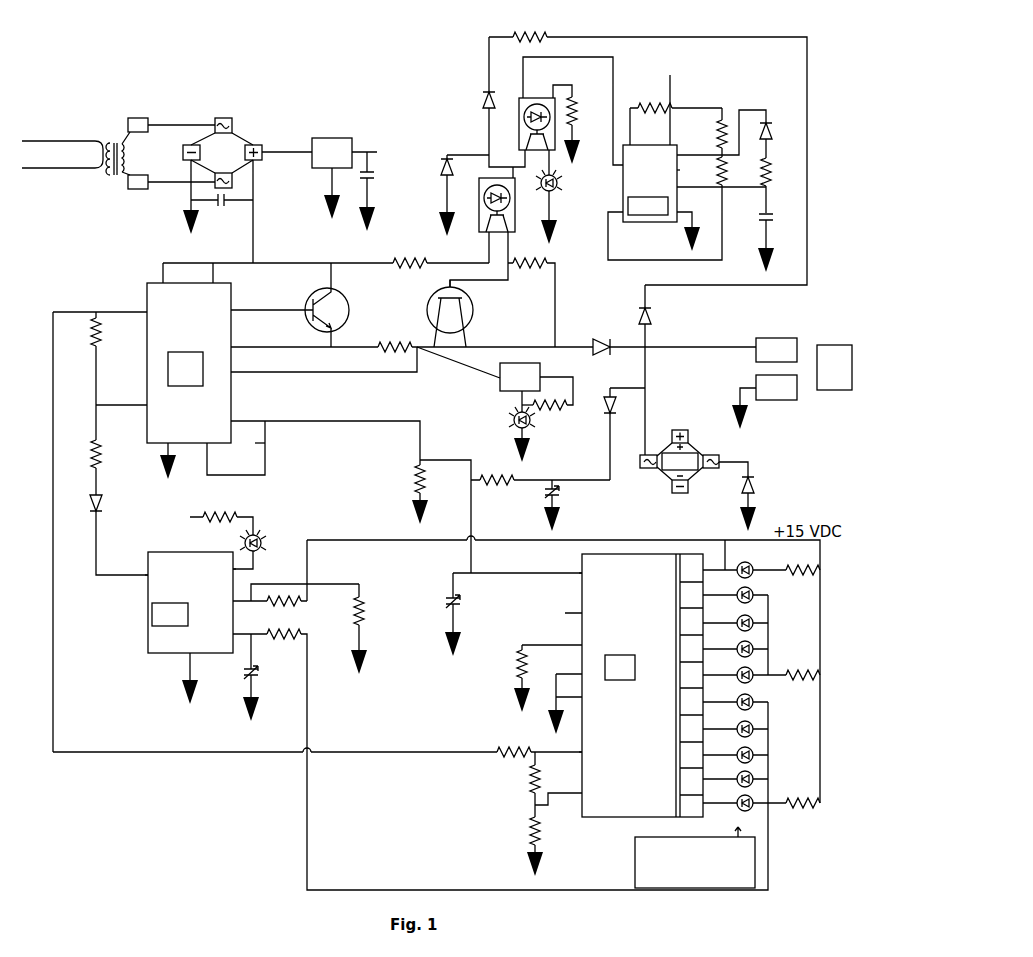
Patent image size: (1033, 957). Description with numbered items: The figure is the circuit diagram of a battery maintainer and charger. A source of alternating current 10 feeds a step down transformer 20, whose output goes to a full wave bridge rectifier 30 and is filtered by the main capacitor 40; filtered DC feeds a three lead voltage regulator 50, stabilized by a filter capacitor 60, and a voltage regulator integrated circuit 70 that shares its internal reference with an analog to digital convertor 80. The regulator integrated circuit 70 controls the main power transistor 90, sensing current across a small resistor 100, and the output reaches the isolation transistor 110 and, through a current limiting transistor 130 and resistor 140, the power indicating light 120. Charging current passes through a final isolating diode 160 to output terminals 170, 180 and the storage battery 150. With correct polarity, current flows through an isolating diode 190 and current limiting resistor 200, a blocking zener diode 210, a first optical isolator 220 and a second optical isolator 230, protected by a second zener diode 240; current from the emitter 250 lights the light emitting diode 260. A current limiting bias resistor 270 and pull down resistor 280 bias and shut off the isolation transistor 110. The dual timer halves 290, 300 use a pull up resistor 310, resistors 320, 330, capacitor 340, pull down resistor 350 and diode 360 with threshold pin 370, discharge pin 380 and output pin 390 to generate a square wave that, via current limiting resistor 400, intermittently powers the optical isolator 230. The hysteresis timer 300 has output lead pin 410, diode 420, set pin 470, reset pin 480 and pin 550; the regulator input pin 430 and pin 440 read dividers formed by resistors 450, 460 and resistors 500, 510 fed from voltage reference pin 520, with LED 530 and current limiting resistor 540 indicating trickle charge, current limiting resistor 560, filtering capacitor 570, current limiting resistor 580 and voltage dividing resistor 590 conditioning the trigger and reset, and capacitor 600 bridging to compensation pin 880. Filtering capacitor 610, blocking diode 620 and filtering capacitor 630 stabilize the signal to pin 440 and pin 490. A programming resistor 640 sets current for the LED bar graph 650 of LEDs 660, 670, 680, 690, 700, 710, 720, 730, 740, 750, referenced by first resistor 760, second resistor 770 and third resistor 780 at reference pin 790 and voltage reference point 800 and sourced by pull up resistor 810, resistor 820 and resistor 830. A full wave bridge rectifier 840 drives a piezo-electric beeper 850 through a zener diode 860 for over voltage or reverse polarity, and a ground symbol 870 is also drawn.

The source of alternating current 10 is at (62, 143).
The step down transformer 20 is at (157, 153).
The full wave bridge rectifier 30 is at (247, 190).
The main capacitor 40 is at (218, 214).
The three lead voltage regulator 50 is at (332, 178).
The filter capacitor 60 is at (385, 182).
The voltage regulator integrated circuit 70 is at (189, 359).
The analog to digital convertor 80 is at (616, 685).
The main power transistor 90 is at (290, 305).
The small resistor 100 is at (412, 339).
The isolation transistor 110 is at (465, 313).
The power indicating light 120 is at (506, 426).
The current limiting transistor 130 is at (402, 376).
The resistor 140 is at (545, 412).
The storage battery 150 is at (834, 367).
The final isolating diode 160 is at (673, 340).
The positive output terminal 170 is at (785, 350).
The negative output terminal 180 is at (773, 402).
The isolating diode 190 is at (660, 370).
The current limiting resistor 200 is at (648, 152).
The blocking zener diode 210 is at (486, 107).
The first optical isolator 220 is at (483, 225).
The second optical isolator 230 is at (571, 111).
The second zener diode 240 is at (448, 195).
The emitter 250 is at (558, 164).
The light emitting diode 260 is at (561, 207).
The current limiting bias resistor 270 is at (326, 273).
The pull down resistor 280 is at (534, 302).
The timer circuit first half 290 is at (661, 198).
The timer circuit second half 300 is at (190, 628).
The pull up resistor 310 is at (676, 103).
The resistor 320 is at (705, 132).
The resistor 330 is at (667, 208).
The capacitor 340 is at (780, 240).
The pull down resistor 350 is at (782, 185).
The diode 360 is at (781, 140).
The threshold pin 370 is at (705, 191).
The discharge pin 380 is at (662, 171).
The output pin 390 is at (695, 137).
The current limiting resistor 400 is at (584, 130).
The output lead pin 410 is at (163, 581).
The diode 420 is at (119, 535).
The input pin 430 is at (137, 411).
The pin 440 is at (307, 441).
The resistor 450 is at (540, 491).
The resistor 460 is at (423, 516).
The set pin 470 is at (482, 758).
The reset pin 480 is at (278, 577).
The pin 490 is at (596, 575).
The resistor 500 is at (80, 467).
The resistor 510 is at (111, 376).
The voltage reference pin 520 is at (116, 530).
The LED 530 is at (263, 549).
The current limiting resistor 540 is at (200, 522).
The pin 550 is at (216, 571).
The current limiting resistor 560 is at (283, 643).
The filtering capacitor 570 is at (267, 677).
The current limiting resistor 580 is at (283, 610).
The voltage dividing resistor 590 is at (373, 629).
The capacitor 600 is at (259, 450).
The filtering capacitor 610 is at (568, 505).
The blocking diode 620 is at (606, 409).
The filtering capacitor 630 is at (500, 614).
The programming resistor 640 is at (532, 689).
The LED bar graph 650 is at (695, 858).
The LED 660 is at (731, 563).
The LED 670 is at (735, 626).
The LED 680 is at (735, 618).
The LED 690 is at (735, 644).
The LED 700 is at (728, 670).
The LED 710 is at (735, 697).
The LED 720 is at (735, 724).
The LED 730 is at (735, 750).
The LED 740 is at (735, 776).
The LED 750 is at (728, 801).
The first resistor 760 is at (317, 746).
The second resistor 770 is at (516, 784).
The third resistor 780 is at (520, 846).
The reference pin 790 is at (596, 757).
The voltage reference point 800 is at (574, 795).
The pull up resistor 810 is at (786, 563).
The resistor 820 is at (786, 668).
The resistor 830 is at (786, 796).
The full wave bridge rectifier 840 is at (683, 461).
The piezo-electric beeper 850 is at (680, 462).
The zener diode 860 is at (752, 496).
The ground 870 is at (149, 463).
The compensation pin 880 is at (236, 448).